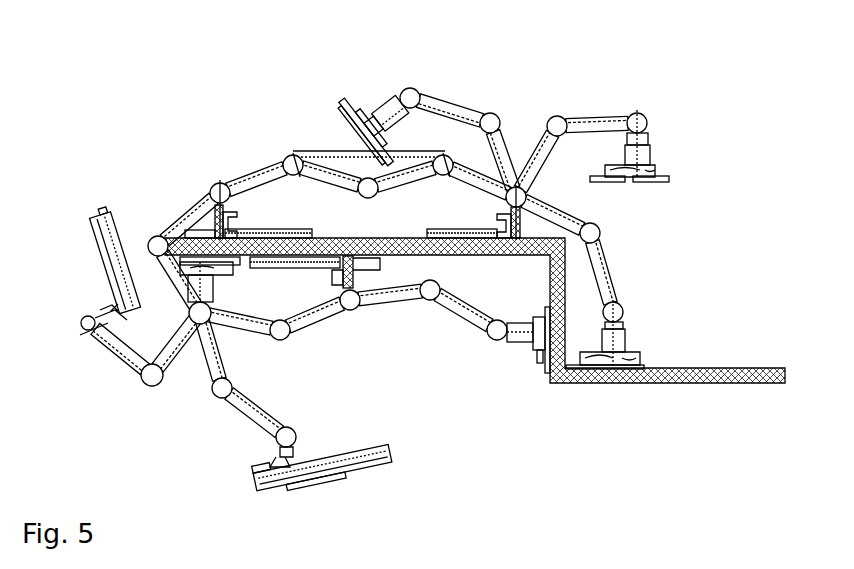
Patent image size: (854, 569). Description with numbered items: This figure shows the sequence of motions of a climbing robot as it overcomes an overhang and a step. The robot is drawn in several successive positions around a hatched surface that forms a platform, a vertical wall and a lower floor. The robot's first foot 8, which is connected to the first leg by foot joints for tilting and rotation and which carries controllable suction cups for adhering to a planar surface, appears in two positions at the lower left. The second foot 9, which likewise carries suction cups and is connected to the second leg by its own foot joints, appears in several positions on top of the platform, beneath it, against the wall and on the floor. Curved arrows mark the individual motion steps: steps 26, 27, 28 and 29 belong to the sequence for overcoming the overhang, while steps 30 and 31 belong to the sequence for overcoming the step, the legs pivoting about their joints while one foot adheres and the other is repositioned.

The first foot 8 is at (101, 213).
The second foot 9 is at (340, 107).
The step 26 is at (430, 328).
The step 27 is at (302, 342).
The step 28 is at (222, 453).
The step 29 is at (310, 133).
The step 30 is at (443, 62).
The step 31 is at (660, 48).